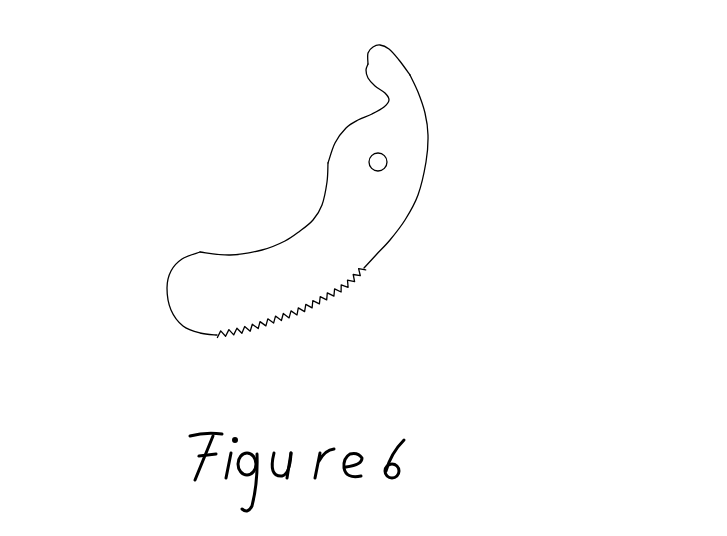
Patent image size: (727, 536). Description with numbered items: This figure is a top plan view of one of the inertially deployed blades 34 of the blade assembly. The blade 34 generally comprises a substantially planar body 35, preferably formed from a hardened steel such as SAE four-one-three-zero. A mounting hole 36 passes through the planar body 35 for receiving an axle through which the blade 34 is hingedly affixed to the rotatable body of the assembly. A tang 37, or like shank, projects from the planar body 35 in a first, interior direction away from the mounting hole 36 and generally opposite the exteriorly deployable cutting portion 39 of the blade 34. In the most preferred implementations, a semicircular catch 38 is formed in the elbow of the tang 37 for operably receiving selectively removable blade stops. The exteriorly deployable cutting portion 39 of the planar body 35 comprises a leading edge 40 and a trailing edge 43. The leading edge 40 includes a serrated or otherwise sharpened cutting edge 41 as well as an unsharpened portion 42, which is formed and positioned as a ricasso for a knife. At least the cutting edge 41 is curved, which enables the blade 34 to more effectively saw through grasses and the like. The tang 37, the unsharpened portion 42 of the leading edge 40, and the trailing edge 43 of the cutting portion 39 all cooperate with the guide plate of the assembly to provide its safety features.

The inertially deployed blade 34 is at (224, 85).
The substantially planar body 35 is at (200, 296).
The mounting hole 36 is at (382, 162).
The tang 37 is at (382, 63).
The semicircular catch 38 is at (379, 99).
The exteriorly deployable cutting portion 39 is at (282, 268).
The leading edge 40 is at (418, 285).
The cutting edge 41 is at (300, 313).
The unsharpened portion 42 is at (407, 227).
The trailing edge 43 is at (264, 196).